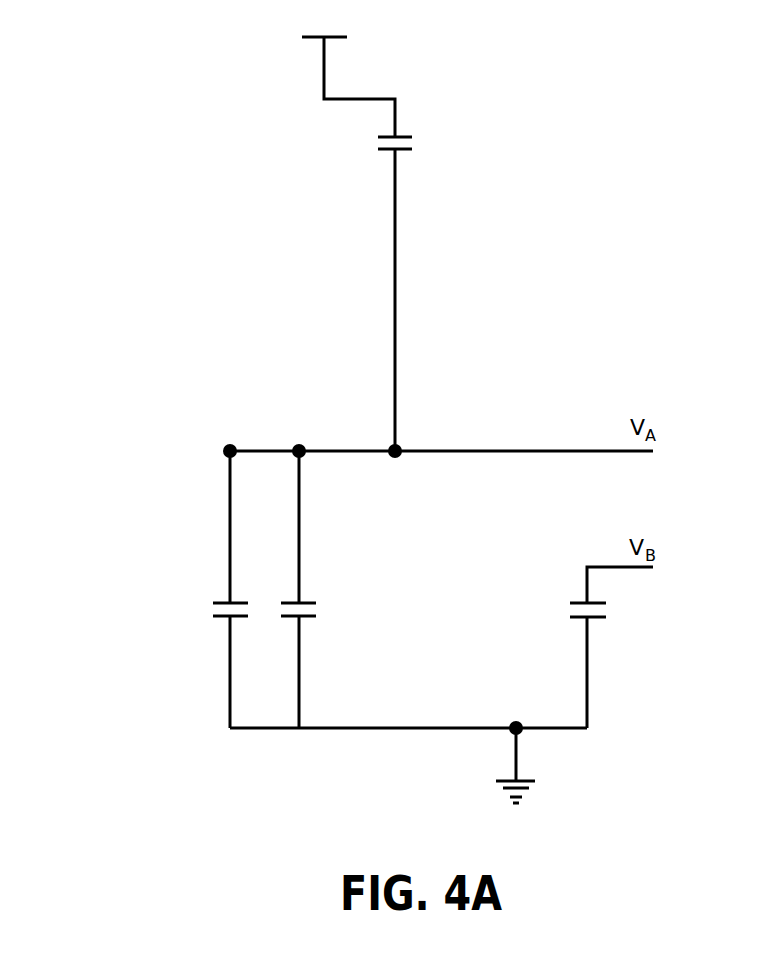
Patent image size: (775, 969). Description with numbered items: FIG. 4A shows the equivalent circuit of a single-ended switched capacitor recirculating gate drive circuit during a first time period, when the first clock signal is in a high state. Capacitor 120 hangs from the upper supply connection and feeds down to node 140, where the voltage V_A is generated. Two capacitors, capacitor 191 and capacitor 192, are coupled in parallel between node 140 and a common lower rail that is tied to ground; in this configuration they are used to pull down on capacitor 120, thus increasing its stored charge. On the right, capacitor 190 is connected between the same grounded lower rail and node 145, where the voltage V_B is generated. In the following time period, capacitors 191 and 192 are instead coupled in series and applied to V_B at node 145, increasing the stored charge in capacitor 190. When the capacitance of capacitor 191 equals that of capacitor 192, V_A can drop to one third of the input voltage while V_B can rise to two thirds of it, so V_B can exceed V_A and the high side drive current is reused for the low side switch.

The capacitor 120 is at (401, 136).
The node 140 is at (527, 451).
The node 145 is at (610, 566).
The capacitor 190 is at (578, 602).
The capacitor 191 is at (222, 602).
The capacitor 192 is at (306, 602).